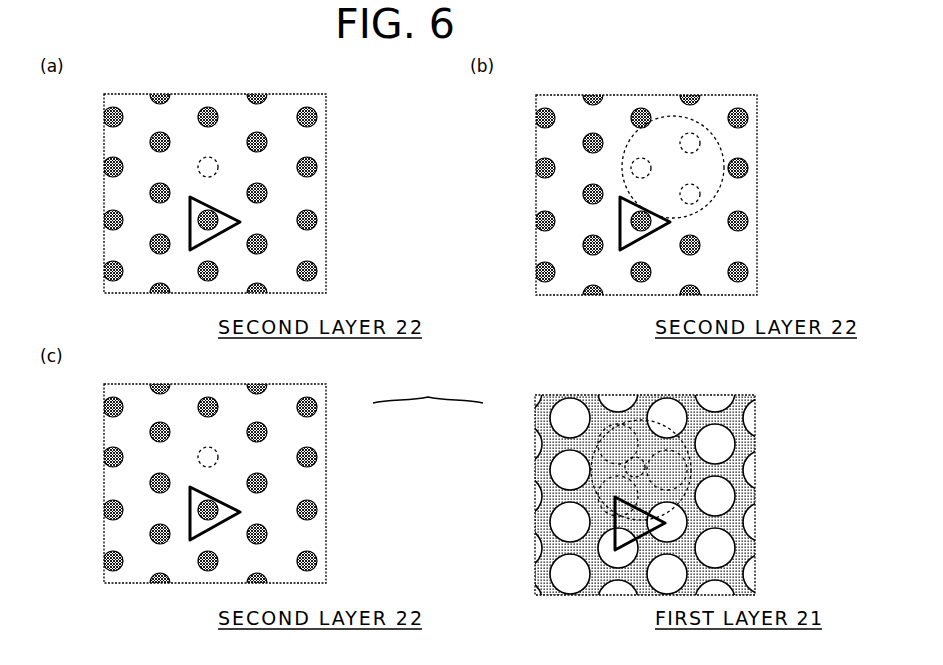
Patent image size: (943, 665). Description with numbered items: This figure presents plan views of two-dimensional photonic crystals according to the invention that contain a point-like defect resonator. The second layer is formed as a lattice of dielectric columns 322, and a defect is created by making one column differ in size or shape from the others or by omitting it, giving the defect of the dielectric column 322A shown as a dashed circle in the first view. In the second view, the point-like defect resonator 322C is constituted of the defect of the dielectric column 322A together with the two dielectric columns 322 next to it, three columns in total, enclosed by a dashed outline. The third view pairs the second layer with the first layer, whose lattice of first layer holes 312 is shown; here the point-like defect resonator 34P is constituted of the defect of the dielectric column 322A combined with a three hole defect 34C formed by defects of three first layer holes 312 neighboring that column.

The first layer hole 312 is at (717, 442).
The dielectric column 322 is at (316, 216).
The defect of the dielectric column 322A is at (218, 165).
The point-like defect resonator 322C is at (672, 170).
The three hole defect 34C is at (640, 466).
The point-like defect resonator 34P is at (428, 390).